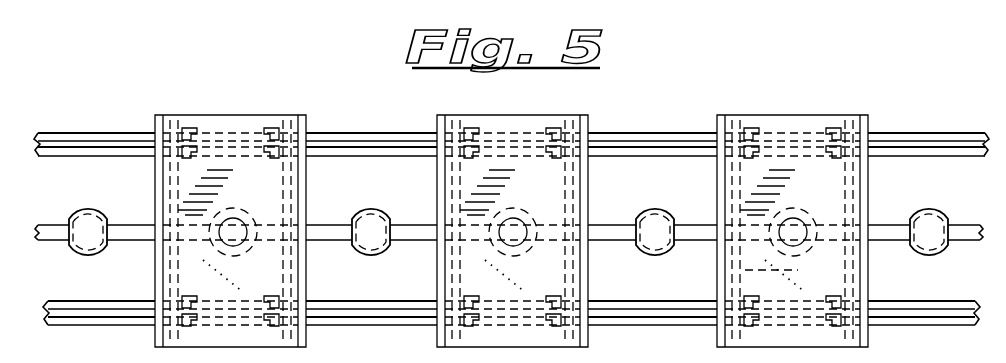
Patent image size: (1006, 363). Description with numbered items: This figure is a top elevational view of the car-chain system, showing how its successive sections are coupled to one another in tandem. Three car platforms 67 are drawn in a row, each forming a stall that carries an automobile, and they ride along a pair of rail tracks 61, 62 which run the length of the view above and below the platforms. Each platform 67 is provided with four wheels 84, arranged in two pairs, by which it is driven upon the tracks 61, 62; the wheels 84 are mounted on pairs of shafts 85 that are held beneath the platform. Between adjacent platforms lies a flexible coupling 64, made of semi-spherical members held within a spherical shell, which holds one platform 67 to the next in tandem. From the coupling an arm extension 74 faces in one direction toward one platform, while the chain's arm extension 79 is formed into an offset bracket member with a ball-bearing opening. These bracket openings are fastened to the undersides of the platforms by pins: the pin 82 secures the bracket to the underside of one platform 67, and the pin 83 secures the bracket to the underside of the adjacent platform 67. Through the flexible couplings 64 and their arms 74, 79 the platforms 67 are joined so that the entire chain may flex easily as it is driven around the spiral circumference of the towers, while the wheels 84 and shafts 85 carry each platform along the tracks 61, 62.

The track 61 is at (520, 200).
The track 62 is at (641, 133).
The car platform 67 is at (668, 329).
The arm extension 74 is at (338, 240).
The arm extension 79 is at (616, 240).
The flexible coupling 64 is at (382, 207).
The pin 82 is at (244, 210).
The pin 83 is at (516, 210).
The wheel 84 is at (285, 128).
The shaft 85 is at (789, 274).